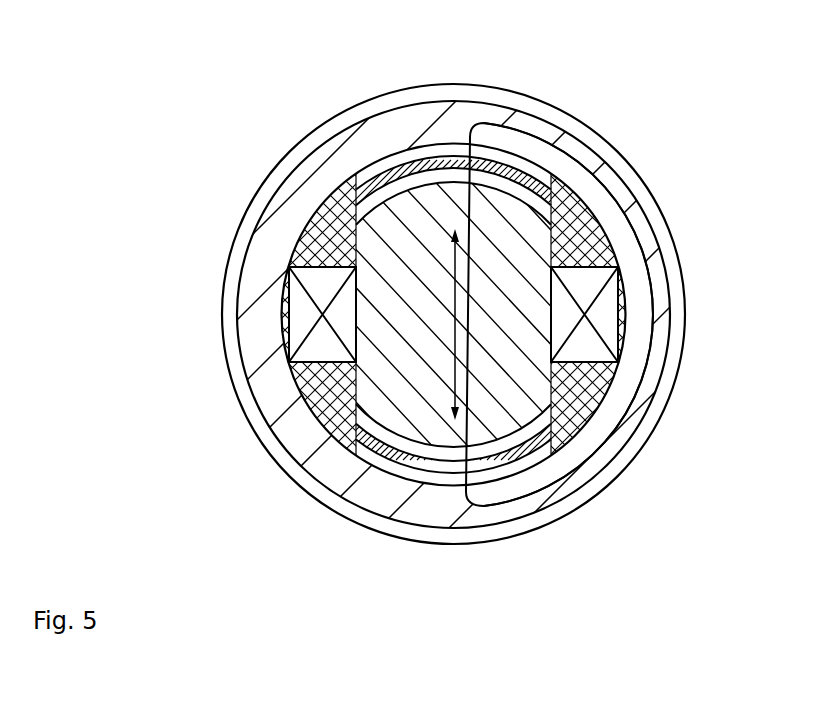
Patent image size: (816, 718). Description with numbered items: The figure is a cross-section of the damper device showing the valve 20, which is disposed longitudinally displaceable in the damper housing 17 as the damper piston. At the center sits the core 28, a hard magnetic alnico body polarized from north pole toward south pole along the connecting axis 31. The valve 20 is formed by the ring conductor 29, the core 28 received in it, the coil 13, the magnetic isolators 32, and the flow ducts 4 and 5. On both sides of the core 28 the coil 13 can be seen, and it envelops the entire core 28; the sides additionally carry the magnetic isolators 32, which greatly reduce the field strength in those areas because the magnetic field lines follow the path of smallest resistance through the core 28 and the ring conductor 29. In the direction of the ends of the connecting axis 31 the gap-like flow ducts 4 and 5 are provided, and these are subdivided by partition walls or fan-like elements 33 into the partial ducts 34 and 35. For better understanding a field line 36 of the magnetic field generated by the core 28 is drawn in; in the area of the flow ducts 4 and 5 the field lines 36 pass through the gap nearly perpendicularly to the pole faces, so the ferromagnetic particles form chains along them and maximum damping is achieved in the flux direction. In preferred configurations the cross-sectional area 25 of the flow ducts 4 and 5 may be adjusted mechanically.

The flow duct 4 is at (367, 170).
The flow duct 5 is at (415, 485).
The coil 13 is at (603, 316).
The damper housing 17 is at (496, 102).
The valve 20 is at (256, 302).
The cross-sectional area 25 is at (388, 477).
The core 28 is at (512, 215).
The ring conductor 29 is at (595, 463).
The connecting axis 31 is at (445, 257).
The magnetic isolator 32 is at (323, 243).
The fan-like element 33 is at (397, 187).
The partial duct 34 is at (380, 148).
The partial duct 35 is at (458, 152).
The field line 36 is at (572, 152).